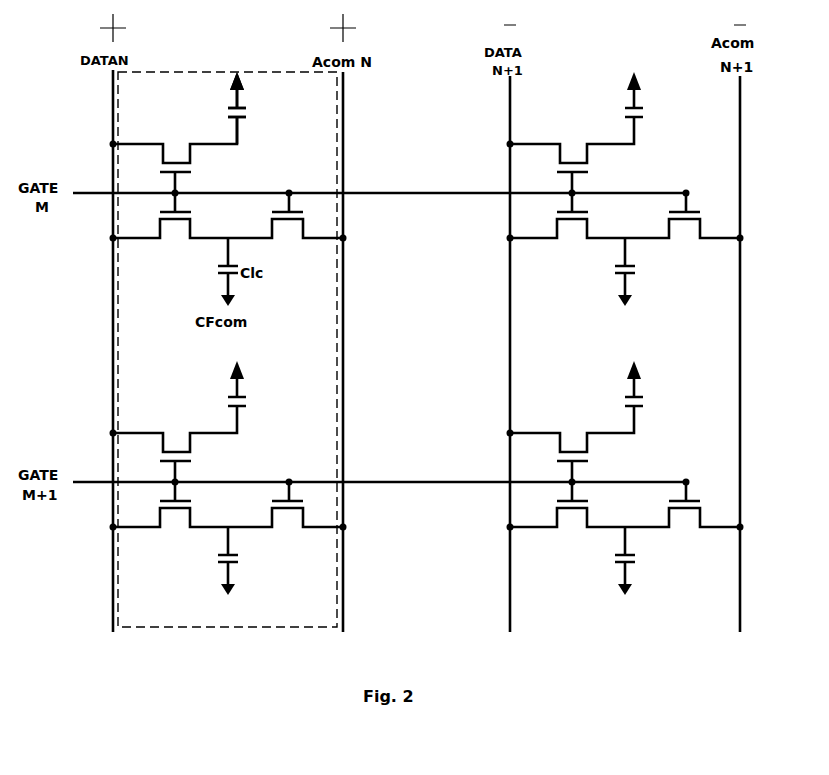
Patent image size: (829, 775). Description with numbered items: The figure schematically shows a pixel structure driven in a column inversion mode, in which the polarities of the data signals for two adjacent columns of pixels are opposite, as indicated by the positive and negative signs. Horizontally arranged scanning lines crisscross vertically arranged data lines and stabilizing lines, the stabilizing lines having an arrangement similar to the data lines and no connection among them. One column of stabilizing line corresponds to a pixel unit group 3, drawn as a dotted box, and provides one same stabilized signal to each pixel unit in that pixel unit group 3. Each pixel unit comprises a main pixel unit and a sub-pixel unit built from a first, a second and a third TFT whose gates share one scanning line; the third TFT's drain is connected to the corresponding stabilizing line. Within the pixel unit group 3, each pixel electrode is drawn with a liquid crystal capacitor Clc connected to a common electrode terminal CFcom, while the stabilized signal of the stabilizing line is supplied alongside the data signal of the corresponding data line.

The pixel unit group 3 is at (157, 72).
The liquid crystal capacitor Clc is at (254, 117).
The color filter common electrode CFcom is at (227, 72).